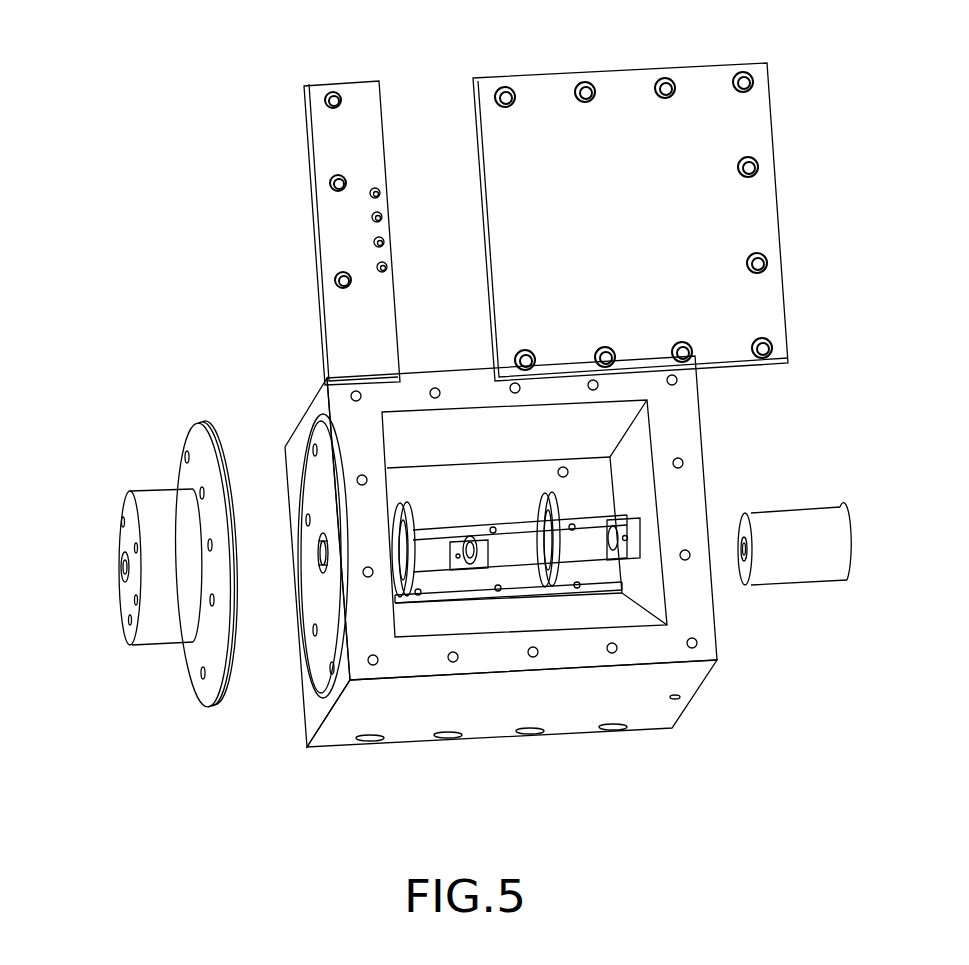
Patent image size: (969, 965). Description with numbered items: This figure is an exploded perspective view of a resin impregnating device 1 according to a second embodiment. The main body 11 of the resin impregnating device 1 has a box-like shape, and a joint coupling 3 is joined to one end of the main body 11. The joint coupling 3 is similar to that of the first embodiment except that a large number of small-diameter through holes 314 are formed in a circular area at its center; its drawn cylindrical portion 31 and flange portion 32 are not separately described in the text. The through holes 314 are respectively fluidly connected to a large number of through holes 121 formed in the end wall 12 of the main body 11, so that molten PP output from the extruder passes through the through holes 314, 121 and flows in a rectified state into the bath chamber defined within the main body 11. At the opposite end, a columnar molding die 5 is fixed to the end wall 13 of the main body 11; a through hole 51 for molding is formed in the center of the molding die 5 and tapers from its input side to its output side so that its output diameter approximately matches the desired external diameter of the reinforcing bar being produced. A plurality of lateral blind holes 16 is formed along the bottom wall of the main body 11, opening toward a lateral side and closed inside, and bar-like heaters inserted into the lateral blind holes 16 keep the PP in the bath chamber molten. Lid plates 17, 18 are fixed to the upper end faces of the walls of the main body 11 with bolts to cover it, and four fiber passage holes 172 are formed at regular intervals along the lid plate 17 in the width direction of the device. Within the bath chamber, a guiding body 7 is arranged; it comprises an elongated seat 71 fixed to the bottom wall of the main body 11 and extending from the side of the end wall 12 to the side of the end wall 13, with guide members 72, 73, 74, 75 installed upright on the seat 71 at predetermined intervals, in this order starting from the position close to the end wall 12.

The resin impregnating device 1 is at (808, 412).
The joint coupling 3 is at (140, 592).
The molding die 5 is at (784, 514).
The guiding body 7 is at (558, 568).
The main body 11 is at (514, 583).
The end wall 12 is at (297, 562).
The end wall 13 is at (717, 622).
The lateral blind holes 16 is at (617, 728).
The lid plate 17 is at (380, 199).
The lid plate 18 is at (607, 73).
The cylindrical body 31 is at (120, 600).
The flange plate 32 is at (218, 693).
The through hole 51 is at (740, 550).
The seat 71 is at (510, 558).
The guide member 72 is at (407, 597).
The guide member 73 is at (477, 553).
The guide member 74 is at (553, 577).
The guide member 75 is at (622, 533).
The through holes 121 is at (322, 543).
The fiber passage holes 172 is at (383, 193).
The through holes 314 is at (127, 558).